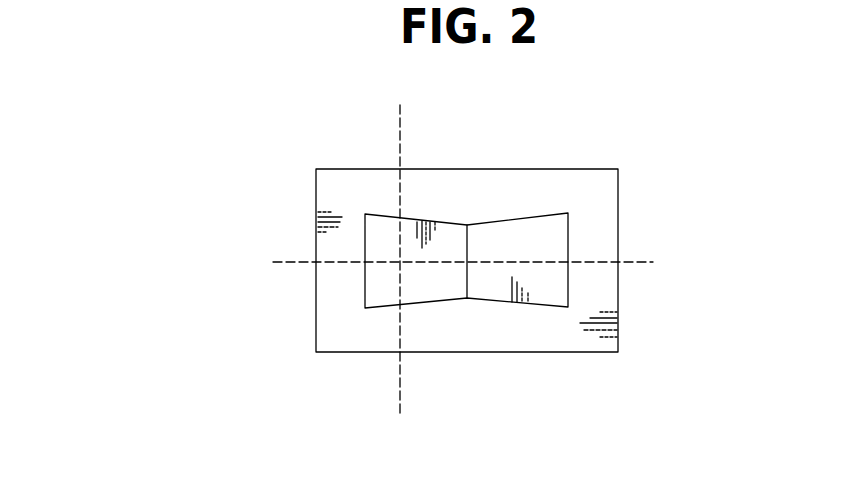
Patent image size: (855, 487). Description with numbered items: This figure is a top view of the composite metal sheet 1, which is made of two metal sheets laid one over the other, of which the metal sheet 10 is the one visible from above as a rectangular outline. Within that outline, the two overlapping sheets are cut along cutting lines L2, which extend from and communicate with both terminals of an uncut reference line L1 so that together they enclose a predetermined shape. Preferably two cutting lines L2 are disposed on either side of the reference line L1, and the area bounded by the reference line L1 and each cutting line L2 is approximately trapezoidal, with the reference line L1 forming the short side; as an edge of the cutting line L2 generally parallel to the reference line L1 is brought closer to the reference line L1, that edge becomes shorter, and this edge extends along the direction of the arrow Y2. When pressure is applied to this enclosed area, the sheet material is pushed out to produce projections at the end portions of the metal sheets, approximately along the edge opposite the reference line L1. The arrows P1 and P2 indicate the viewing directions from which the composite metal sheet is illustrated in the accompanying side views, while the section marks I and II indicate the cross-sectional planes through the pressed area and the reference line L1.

The composite metal sheet 1 is at (651, 172).
The metal sheet 10 is at (598, 185).
The reference line L1 is at (466, 252).
The cutting line L2 is at (362, 234).
The section line I- I is at (287, 263).
The section line II- II is at (397, 125).
The arrow P1 is at (462, 395).
The arrow P2 is at (688, 262).
The arrow Y2 is at (230, 238).